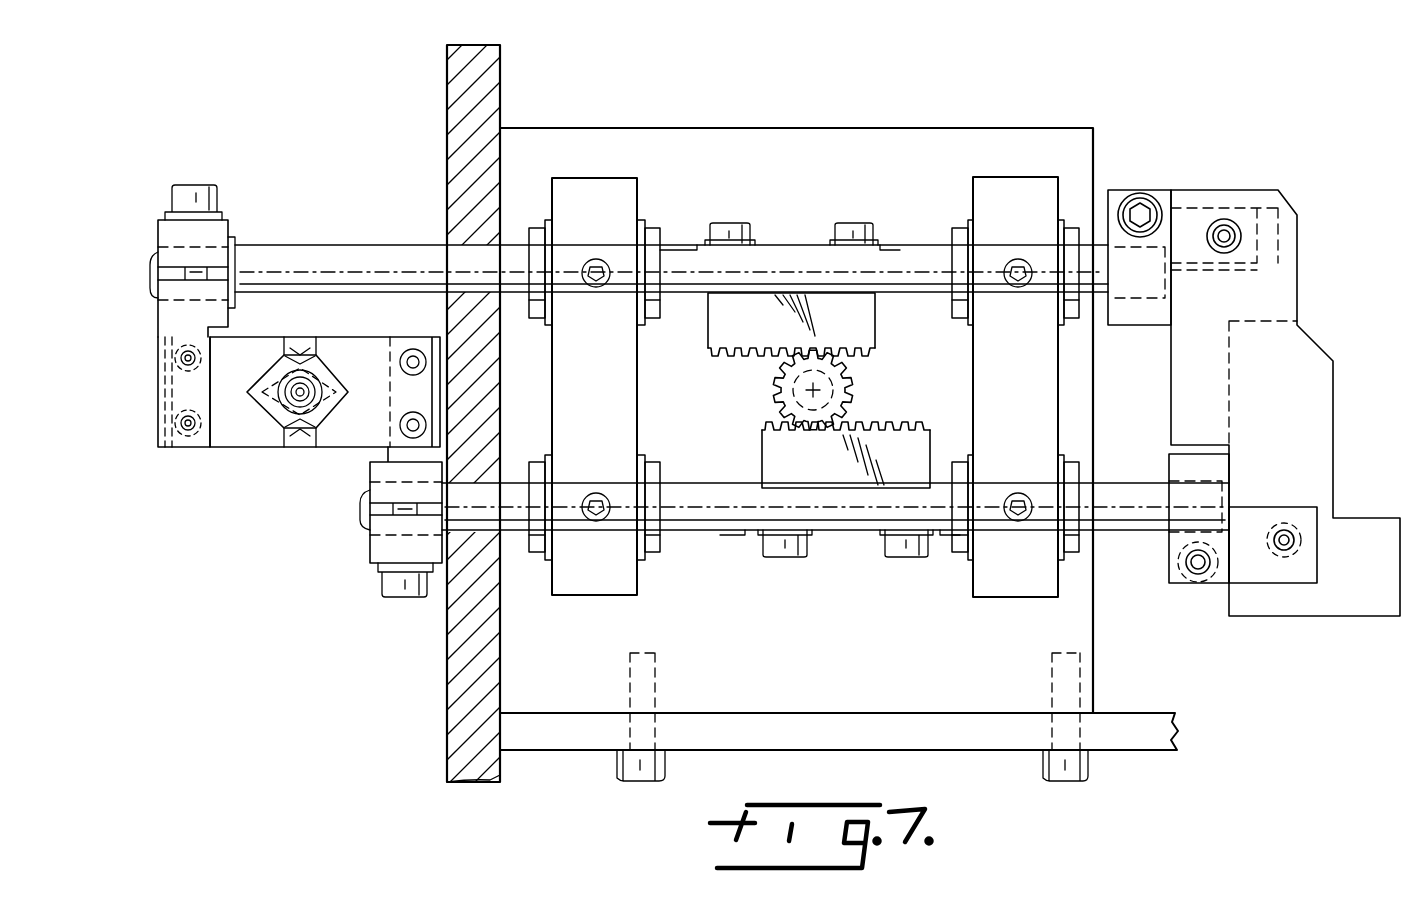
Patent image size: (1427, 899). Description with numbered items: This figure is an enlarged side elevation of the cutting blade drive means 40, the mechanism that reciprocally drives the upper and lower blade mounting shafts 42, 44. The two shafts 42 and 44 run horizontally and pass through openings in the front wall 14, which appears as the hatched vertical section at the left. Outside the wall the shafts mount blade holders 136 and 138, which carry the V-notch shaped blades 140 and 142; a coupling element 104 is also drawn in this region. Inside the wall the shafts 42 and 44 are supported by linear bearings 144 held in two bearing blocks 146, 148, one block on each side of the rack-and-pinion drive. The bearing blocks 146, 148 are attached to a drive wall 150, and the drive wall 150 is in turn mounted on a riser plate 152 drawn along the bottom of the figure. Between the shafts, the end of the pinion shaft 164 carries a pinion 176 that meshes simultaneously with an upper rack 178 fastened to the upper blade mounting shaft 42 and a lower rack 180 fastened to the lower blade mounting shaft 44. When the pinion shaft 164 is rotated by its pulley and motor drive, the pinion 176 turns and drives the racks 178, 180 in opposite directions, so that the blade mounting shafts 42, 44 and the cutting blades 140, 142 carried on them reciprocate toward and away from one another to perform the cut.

The front wall 14 is at (447, 80).
The cutting blade drive means 40 is at (850, 427).
The upper blade mounting shaft 42 is at (357, 250).
The lower blade mounting shaft 44 is at (1118, 530).
The coupling 104 is at (318, 382).
The blade holder 136 is at (165, 238).
The blade holder 138 is at (372, 553).
The V-notch shaped blade 140 is at (240, 437).
The V-notch shaped blade 142 is at (360, 432).
The linear bearings 144 is at (652, 232).
The bearing block 146 is at (1032, 588).
The bearing block 148 is at (582, 587).
The drive wall 150 is at (838, 93).
The riser plate 152 is at (1142, 742).
The pinion shaft 164 is at (782, 386).
The pinion 176 is at (855, 386).
The rack 178 is at (870, 326).
The rack 180 is at (766, 452).